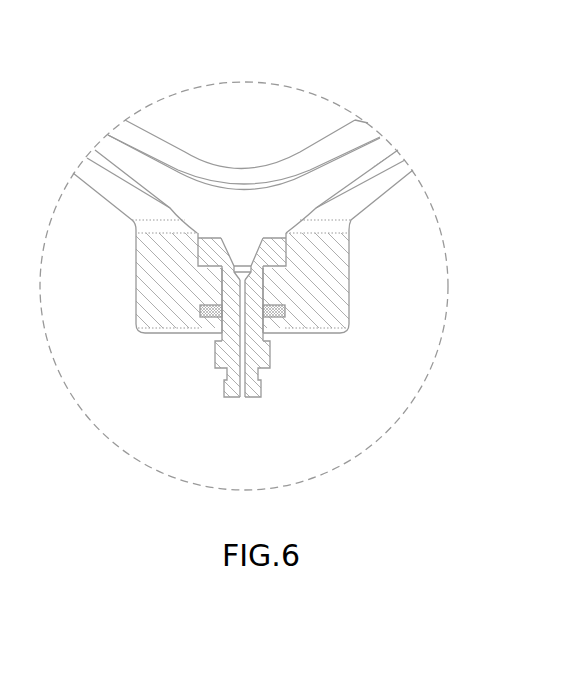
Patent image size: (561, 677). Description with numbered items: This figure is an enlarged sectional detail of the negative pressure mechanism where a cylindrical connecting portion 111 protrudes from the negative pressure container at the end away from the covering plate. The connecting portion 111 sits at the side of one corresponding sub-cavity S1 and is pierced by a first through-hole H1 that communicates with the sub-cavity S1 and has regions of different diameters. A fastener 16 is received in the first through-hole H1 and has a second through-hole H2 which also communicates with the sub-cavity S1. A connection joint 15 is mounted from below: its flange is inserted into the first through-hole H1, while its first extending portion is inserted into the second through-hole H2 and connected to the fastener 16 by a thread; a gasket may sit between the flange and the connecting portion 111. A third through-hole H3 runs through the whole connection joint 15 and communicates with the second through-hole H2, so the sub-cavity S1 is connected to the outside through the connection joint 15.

The sub-cavity S1 is at (282, 120).
The connecting portion 111 is at (137, 278).
The fastener 16 is at (212, 238).
The connection joint 15 is at (215, 345).
The first through-hole H1 is at (264, 299).
The second through-hole H2 is at (245, 246).
The third through-hole H3 is at (242, 388).